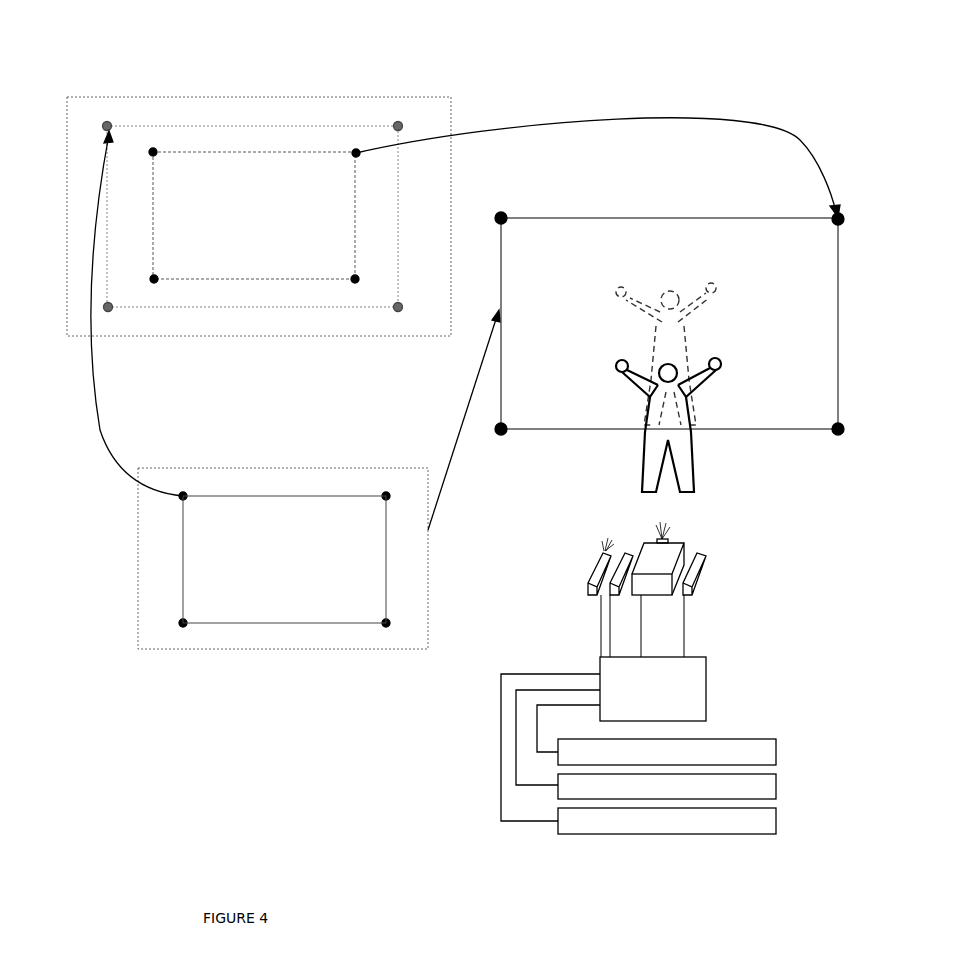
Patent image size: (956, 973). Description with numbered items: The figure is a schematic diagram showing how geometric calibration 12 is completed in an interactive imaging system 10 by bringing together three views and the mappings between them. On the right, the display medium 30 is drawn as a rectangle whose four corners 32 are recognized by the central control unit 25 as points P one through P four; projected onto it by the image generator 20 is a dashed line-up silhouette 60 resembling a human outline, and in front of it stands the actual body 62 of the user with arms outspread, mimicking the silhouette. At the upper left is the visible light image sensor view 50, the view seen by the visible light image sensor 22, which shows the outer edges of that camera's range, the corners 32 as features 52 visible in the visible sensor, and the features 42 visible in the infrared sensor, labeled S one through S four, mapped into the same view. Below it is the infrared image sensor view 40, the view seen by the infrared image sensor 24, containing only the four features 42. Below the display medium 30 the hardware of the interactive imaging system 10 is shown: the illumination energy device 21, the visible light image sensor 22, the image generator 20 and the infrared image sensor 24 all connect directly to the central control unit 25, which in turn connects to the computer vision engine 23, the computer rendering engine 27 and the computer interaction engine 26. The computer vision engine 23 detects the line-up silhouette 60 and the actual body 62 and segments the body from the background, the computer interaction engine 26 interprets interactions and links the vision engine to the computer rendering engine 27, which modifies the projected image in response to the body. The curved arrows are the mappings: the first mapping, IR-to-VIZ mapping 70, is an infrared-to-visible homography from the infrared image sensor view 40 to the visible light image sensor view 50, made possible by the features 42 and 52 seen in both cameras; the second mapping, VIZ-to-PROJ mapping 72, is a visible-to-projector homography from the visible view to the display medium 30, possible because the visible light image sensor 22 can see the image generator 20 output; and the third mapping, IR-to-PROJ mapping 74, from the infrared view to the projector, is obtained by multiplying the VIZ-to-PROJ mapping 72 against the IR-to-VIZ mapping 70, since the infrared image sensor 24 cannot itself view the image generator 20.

The interactive imaging system 10 is at (752, 611).
The geometric calibration 12 is at (532, 56).
The image generator 20 is at (652, 590).
The illumination energy device 21 is at (596, 595).
The visible light image sensor 22 is at (614, 595).
The computer vision engine 23 is at (766, 748).
The infrared image sensor 24 is at (690, 595).
The central control unit 25 is at (688, 710).
The computer interaction engine 26 is at (766, 816).
The computer rendering engine 27 is at (766, 782).
The display medium 30 is at (648, 240).
The corners of the display medium 32 is at (158, 154).
The infrared image sensor view 40 is at (428, 600).
The features visible in the infrared image sensor 42 is at (102, 123).
The visible light image sensor view 50 is at (375, 328).
The features visible in the visible light image sensor 52 is at (268, 90).
The line-up silhouette 60 is at (718, 296).
The actual body 62 is at (719, 366).
The mapping 1, IR-to-VIZ 70 is at (118, 413).
The mapping 2, VIZ-to-PROJ 72 is at (660, 125).
The mapping 3, IR-to-PROJ 74 is at (470, 475).